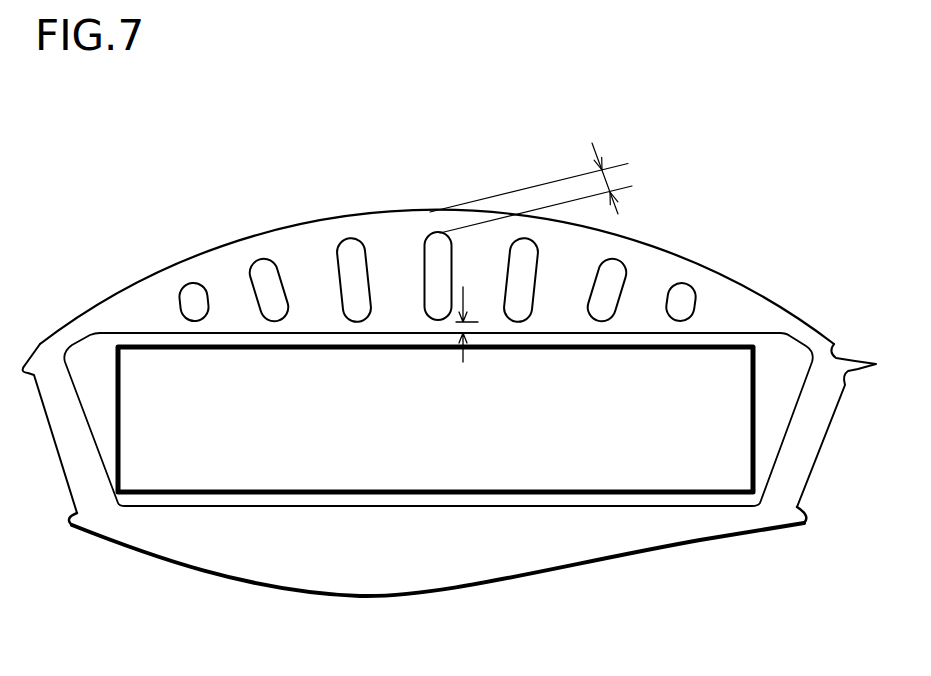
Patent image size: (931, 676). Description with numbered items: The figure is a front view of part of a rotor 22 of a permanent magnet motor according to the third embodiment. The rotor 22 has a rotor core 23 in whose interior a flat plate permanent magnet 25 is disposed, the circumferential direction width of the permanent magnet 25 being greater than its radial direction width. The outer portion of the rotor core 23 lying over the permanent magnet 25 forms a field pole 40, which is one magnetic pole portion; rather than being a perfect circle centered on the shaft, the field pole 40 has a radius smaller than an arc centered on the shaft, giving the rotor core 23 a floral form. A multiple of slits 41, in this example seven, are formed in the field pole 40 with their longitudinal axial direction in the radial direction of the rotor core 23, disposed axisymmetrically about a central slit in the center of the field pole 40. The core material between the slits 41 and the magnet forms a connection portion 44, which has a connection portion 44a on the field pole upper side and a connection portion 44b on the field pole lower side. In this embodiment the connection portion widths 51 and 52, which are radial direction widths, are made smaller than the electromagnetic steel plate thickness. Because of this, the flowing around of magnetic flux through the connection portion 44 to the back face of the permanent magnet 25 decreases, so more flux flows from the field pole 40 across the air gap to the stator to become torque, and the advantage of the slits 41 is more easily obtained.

The rotor 22 is at (449, 351).
The rotor core 23 is at (227, 267).
The permanent magnet 25 is at (598, 458).
The field pole 40 is at (160, 285).
The slit 41 is at (686, 291).
The connection portion 44 is at (435, 225).
The connection portion (field pole upper side) 44a is at (440, 222).
The connection portion (field pole lower side) 44b is at (428, 328).
The connection portion width 51 is at (609, 182).
The connection portion width 52 is at (478, 330).